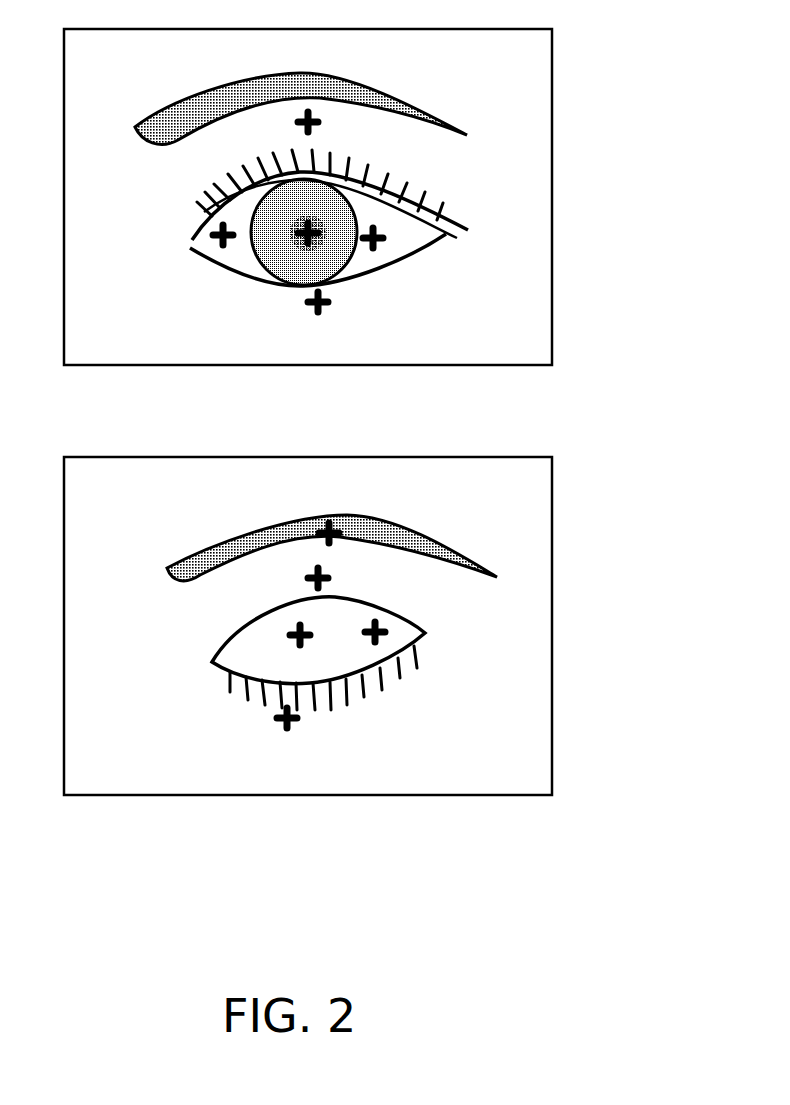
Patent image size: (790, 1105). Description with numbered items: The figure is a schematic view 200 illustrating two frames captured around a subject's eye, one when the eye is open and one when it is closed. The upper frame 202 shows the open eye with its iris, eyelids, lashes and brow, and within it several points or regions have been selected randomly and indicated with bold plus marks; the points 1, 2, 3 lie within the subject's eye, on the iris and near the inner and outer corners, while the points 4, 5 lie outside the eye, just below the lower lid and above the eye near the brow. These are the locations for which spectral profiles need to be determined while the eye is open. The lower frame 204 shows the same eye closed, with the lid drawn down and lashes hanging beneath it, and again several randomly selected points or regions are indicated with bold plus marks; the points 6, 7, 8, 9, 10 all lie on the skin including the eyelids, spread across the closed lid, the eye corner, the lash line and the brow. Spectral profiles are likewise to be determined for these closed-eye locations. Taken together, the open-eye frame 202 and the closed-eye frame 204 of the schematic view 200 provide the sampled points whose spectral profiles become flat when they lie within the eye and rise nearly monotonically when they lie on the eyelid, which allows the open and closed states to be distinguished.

The point or region within the subject's eye 1 is at (318, 233).
The point or region within the subject's eye 2 is at (383, 238).
The point or region within the subject's eye 3 is at (230, 229).
The point or region outside the subject's eye 4 is at (328, 300).
The point or region outside the subject's eye 5 is at (318, 122).
The point or region on the skin including eyelids 6 is at (310, 635).
The point or region on the skin including eyelids 7 is at (328, 578).
The point or region on the skin including eyelids 8 is at (385, 632).
The point or region on the skin including eyelids 9 is at (297, 718).
The point or region on the skin including eyelids 10 is at (339, 533).
The schematic view 200 is at (383, 918).
The frame 202 is at (552, 183).
The frame 204 is at (552, 617).